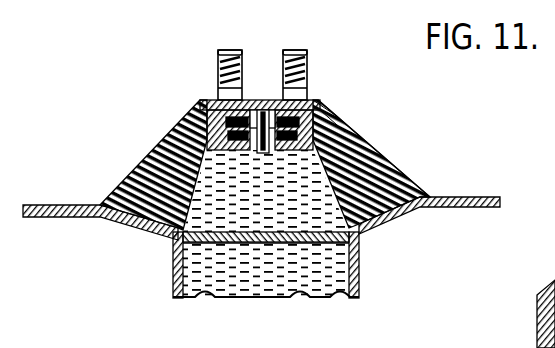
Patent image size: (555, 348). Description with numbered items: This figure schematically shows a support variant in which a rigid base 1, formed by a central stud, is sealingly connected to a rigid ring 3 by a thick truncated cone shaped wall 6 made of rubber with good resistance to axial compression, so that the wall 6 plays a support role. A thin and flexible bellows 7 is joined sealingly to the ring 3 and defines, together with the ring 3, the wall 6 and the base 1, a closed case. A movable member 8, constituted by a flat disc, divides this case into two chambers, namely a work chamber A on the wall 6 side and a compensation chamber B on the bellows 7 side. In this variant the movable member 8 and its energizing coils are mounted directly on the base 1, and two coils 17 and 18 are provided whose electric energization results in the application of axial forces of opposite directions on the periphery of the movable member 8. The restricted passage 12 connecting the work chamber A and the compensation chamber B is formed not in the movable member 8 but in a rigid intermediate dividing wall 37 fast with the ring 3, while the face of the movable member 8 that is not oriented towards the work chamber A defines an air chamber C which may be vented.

The rigid base 1 is at (207, 102).
The air chamber C is at (271, 108).
The coil 18 is at (320, 101).
The movable member 8 is at (330, 120).
The truncated cone shaped wall 6 is at (357, 147).
The coil 17 is at (383, 159).
The rigid ring 3 is at (463, 197).
The work chamber A is at (240, 207).
The compensation chamber B is at (323, 263).
The restricted passage 12 is at (273, 243).
The rigid intermediate dividing wall 37 is at (222, 243).
The bellows 7 is at (303, 294).